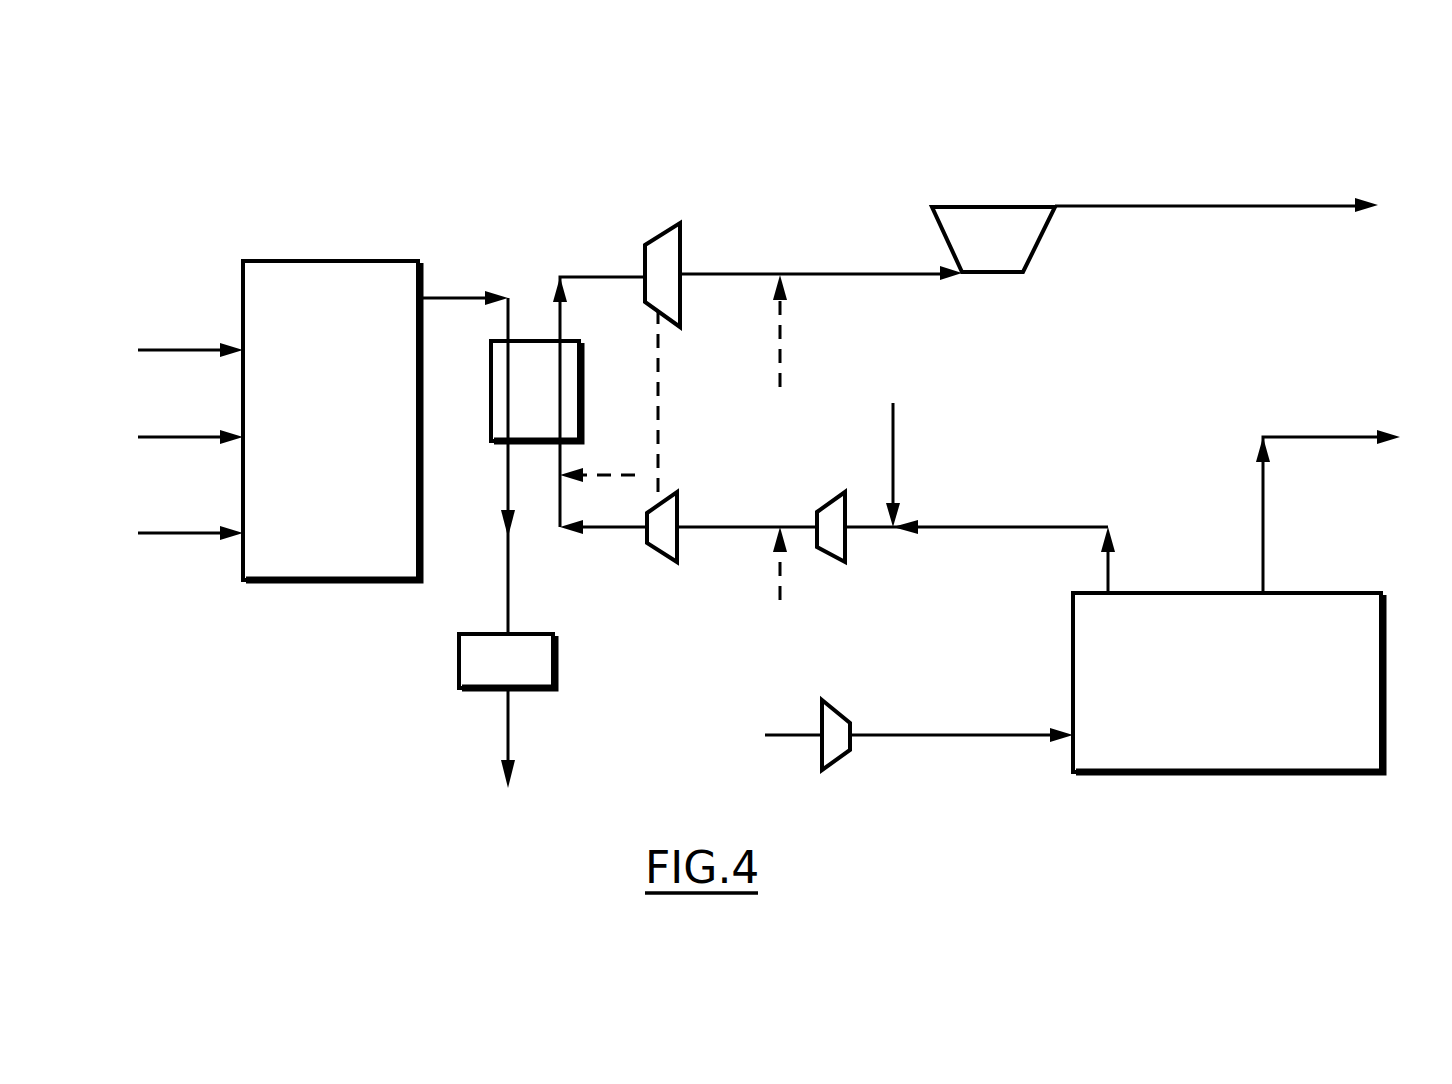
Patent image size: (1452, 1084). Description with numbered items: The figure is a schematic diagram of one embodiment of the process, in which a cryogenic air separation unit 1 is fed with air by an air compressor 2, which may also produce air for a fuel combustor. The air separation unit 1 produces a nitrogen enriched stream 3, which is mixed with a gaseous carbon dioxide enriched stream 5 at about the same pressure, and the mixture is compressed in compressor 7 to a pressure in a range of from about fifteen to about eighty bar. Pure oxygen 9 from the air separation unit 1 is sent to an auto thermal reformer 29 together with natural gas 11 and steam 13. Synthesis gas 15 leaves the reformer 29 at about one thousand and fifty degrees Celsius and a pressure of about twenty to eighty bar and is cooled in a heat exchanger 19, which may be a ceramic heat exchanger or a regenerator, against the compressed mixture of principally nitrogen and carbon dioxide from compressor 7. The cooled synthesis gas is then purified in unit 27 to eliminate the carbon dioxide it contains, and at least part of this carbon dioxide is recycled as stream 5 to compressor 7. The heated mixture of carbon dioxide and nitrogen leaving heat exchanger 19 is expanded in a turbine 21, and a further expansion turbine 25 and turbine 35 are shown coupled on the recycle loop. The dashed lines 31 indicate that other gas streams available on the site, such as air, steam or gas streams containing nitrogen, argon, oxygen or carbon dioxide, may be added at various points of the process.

The cryogenic air separation unit 1 is at (1352, 698).
The air compressor 2 is at (832, 720).
The nitrogen enriched stream 3 is at (1056, 522).
The gaseous carbon dioxide enriched stream 5 is at (897, 443).
The compressor 7 is at (833, 521).
The pure oxygen 9 is at (198, 533).
The natural gas 11 is at (197, 437).
The steam 13 is at (168, 350).
The synthesis gas 15 is at (443, 298).
The heat exchanger 19 is at (573, 402).
The turbine 21 is at (1018, 228).
The expander turbine 25 is at (662, 540).
The purification unit 27 is at (478, 655).
The auto thermal reformer 29 is at (343, 298).
The control signal line 31 is at (780, 335).
The turbine 35 is at (670, 245).